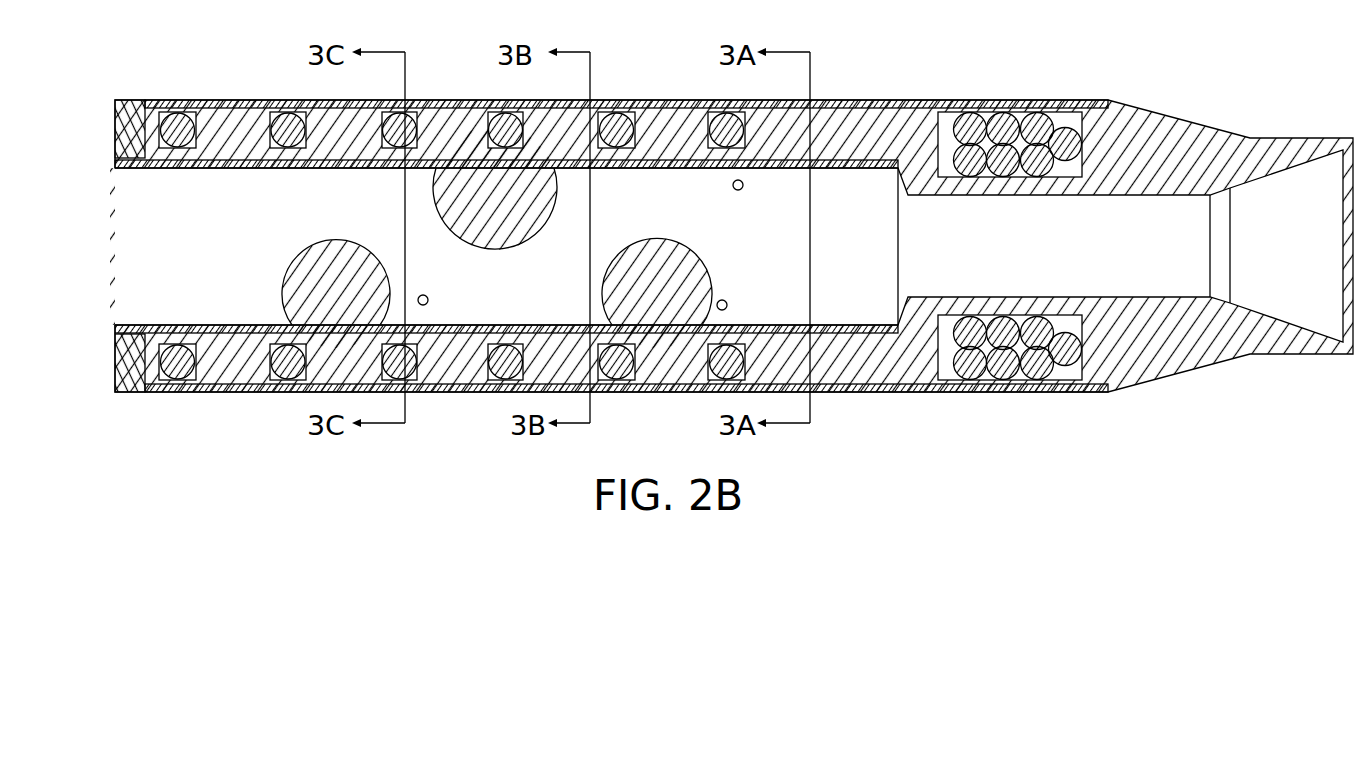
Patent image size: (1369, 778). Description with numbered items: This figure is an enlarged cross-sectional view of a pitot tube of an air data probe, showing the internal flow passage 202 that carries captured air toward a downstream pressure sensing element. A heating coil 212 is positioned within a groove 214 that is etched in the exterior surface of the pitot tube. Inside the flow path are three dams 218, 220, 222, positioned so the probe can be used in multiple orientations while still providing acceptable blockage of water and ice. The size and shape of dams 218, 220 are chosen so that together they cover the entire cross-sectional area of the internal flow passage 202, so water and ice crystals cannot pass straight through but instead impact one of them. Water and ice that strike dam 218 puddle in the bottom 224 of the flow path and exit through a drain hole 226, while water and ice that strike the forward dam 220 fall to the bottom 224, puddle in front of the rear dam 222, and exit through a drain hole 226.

The internal flow passage 202 is at (883, 249).
The heating coil 212 is at (285, 125).
The groove 214 is at (948, 128).
The dam 218 is at (688, 240).
The dam 220 is at (470, 235).
The dam 222 is at (303, 249).
The bottom 224 is at (565, 325).
The drain hole 226 is at (423, 295).